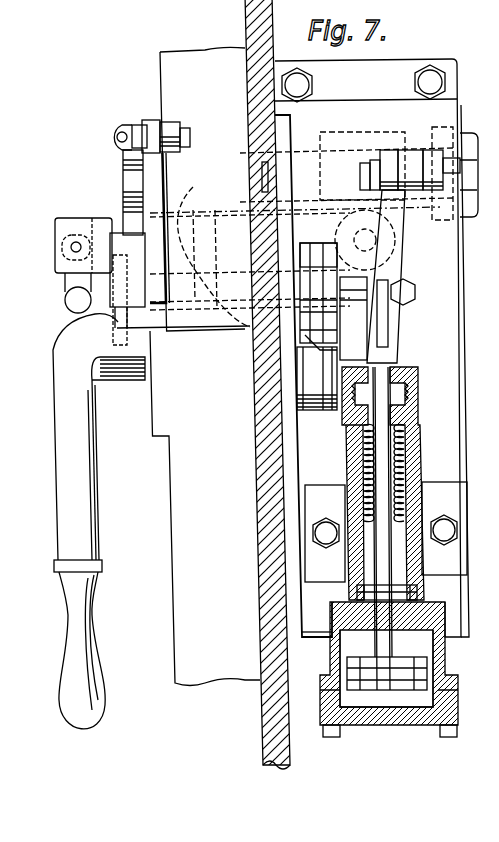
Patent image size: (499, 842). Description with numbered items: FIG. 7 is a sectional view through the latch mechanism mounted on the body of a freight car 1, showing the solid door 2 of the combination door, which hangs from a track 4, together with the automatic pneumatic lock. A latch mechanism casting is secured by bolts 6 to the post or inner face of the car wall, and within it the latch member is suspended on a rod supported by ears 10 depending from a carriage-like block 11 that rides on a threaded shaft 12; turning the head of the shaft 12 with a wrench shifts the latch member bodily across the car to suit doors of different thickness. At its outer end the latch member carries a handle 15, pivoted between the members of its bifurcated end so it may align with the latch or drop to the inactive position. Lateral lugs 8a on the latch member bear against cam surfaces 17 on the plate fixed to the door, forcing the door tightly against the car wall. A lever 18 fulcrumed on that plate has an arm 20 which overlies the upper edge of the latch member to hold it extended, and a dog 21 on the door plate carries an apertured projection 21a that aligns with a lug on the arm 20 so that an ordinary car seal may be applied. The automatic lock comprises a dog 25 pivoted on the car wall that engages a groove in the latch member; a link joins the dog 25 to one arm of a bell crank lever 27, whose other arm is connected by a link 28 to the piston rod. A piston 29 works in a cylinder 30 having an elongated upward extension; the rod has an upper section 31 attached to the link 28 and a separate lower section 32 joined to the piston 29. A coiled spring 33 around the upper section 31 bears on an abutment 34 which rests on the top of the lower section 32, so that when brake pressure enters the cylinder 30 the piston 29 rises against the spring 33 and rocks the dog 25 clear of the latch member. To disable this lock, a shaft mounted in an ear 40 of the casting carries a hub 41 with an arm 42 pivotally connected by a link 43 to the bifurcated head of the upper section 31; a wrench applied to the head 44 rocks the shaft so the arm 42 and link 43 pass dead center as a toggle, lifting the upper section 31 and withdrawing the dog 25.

The body of a freight car 1 is at (262, 455).
The solid door 2 is at (205, 366).
The track 4 is at (466, 440).
The bolts 6 is at (430, 70).
The laterally extending lug 8a is at (190, 205).
The ears 10 is at (400, 252).
The carriage-like block 11 is at (328, 133).
The threaded shaft 12 is at (295, 231).
The handle 15 is at (72, 298).
The cam surfaces 17 is at (215, 318).
The lever 18 is at (60, 371).
The arm 20 is at (124, 197).
The dog 21 is at (173, 122).
The apertured projection 21a is at (126, 124).
The dog 25 is at (318, 405).
The bell crank lever 27 is at (302, 243).
The link 28 is at (395, 320).
The piston 29 is at (364, 712).
The cylinder 30 is at (332, 652).
The upper section 31 is at (415, 396).
The lower section 32 is at (387, 528).
The coiled spring 33 is at (396, 456).
The abutment 34 is at (412, 594).
The ear 40 is at (440, 160).
The hub 41 is at (413, 152).
The arm 42 is at (390, 152).
The link 43 is at (396, 227).
The head 44 is at (462, 166).